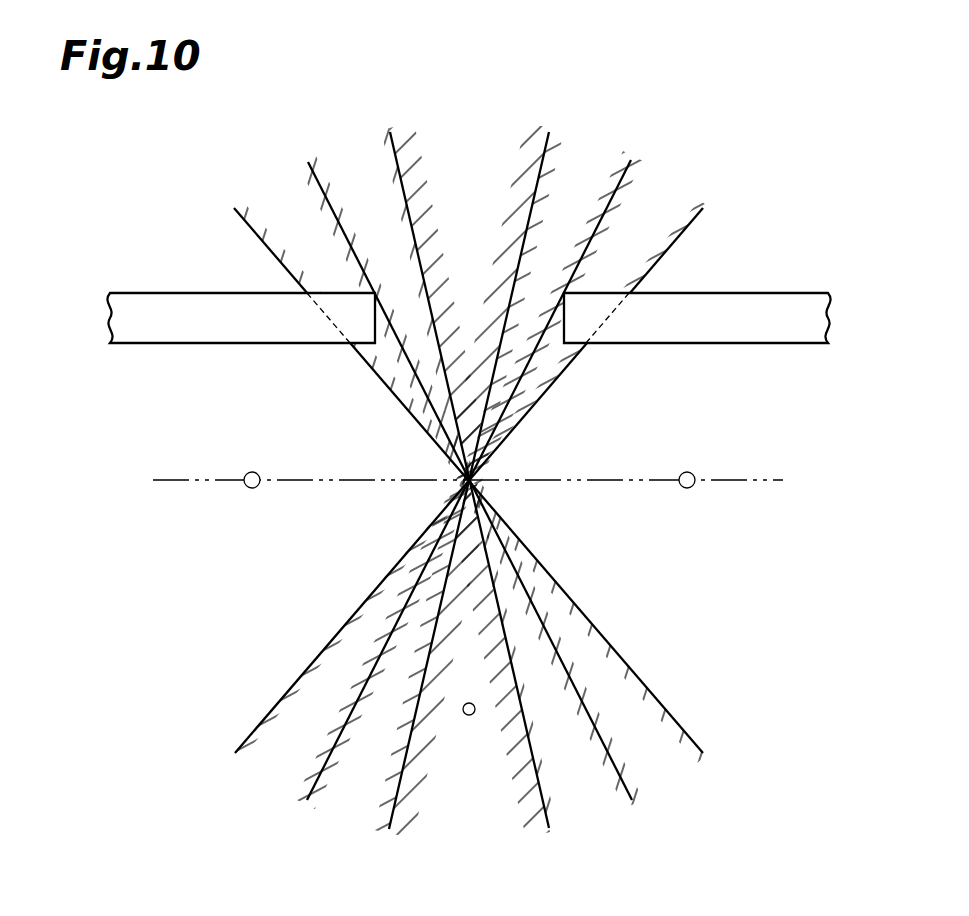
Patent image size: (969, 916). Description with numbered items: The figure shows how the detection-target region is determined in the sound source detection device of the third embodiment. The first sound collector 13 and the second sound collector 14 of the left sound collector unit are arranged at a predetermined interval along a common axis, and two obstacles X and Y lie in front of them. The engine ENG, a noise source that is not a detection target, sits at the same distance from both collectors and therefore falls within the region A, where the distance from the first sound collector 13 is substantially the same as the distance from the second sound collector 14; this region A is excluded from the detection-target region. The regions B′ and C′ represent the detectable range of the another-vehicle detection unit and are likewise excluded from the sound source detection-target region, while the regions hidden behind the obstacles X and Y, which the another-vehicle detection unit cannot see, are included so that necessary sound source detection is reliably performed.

The first sound collector 13 is at (252, 472).
The second sound collector 14 is at (687, 472).
The obstacle X is at (165, 305).
The obstacle Y is at (757, 305).
The engine ENG is at (475, 712).
The region A is at (483, 191).
The region B′ is at (377, 200).
The region C′ is at (560, 200).